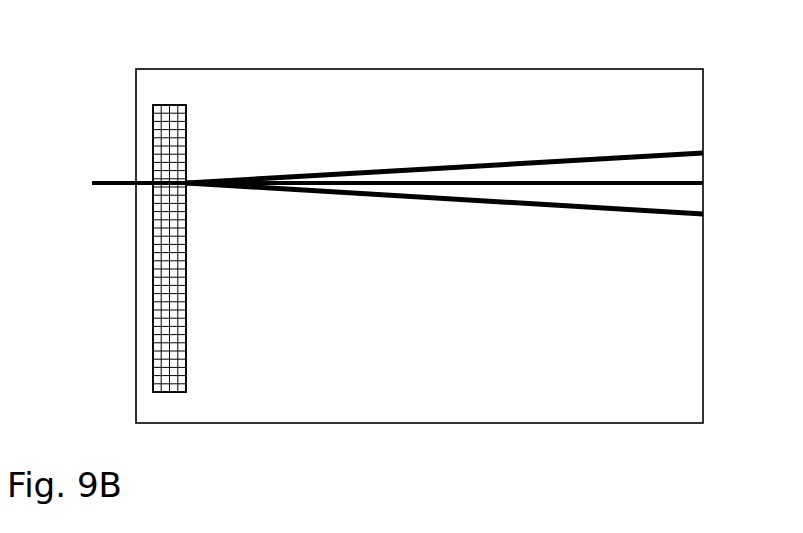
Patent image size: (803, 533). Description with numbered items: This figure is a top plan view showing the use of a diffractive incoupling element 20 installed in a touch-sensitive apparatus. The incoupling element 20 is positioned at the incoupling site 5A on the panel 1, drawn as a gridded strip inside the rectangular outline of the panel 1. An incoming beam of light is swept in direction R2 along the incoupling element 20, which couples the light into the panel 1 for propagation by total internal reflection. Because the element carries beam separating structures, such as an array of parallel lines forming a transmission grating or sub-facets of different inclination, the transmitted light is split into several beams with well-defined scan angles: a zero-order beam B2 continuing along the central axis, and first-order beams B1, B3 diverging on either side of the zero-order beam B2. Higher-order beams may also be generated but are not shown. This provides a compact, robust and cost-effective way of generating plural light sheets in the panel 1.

The panel 1 is at (697, 68).
The incoupling site 5A is at (175, 105).
The incoupling element 20 is at (162, 275).
The first-order beam B1 is at (470, 204).
The zero-order beam B2 is at (535, 188).
The first-order beam B3 is at (481, 164).
The sweep direction R2 is at (252, 125).